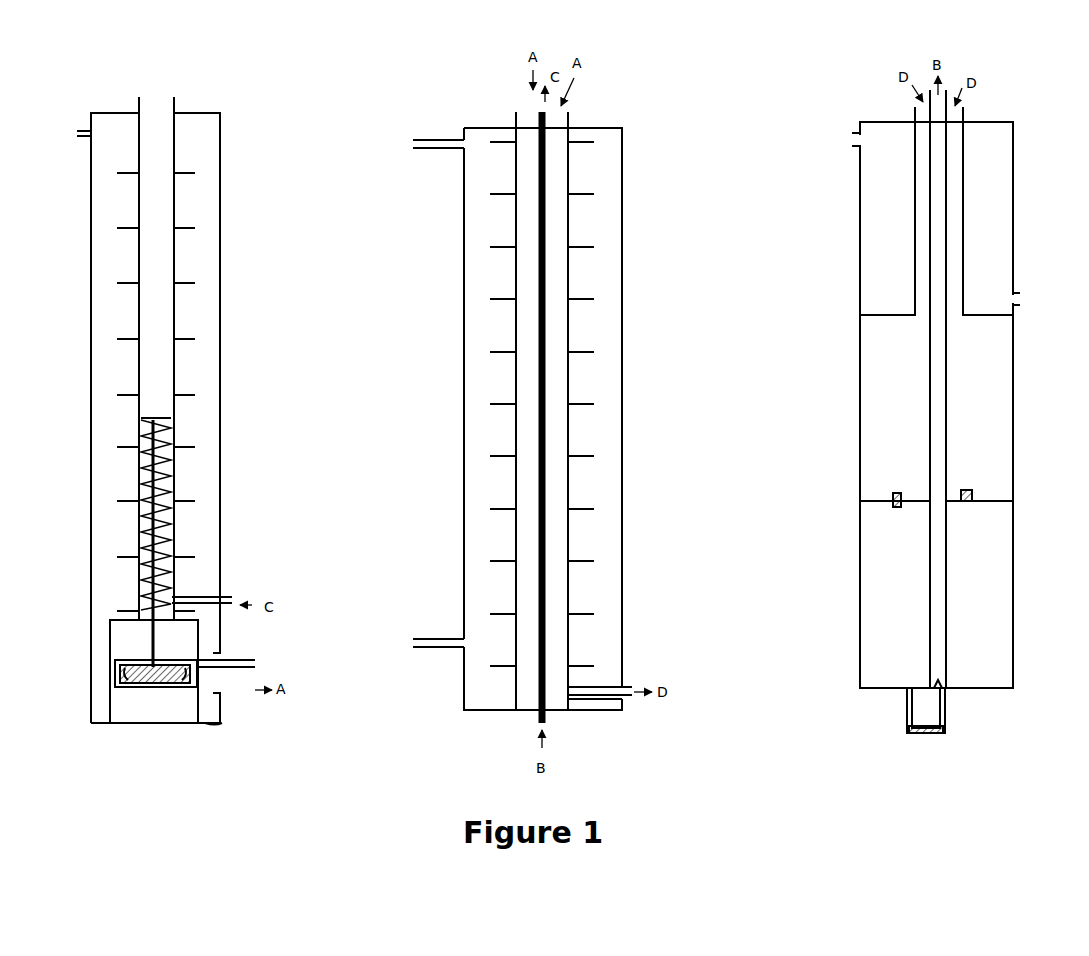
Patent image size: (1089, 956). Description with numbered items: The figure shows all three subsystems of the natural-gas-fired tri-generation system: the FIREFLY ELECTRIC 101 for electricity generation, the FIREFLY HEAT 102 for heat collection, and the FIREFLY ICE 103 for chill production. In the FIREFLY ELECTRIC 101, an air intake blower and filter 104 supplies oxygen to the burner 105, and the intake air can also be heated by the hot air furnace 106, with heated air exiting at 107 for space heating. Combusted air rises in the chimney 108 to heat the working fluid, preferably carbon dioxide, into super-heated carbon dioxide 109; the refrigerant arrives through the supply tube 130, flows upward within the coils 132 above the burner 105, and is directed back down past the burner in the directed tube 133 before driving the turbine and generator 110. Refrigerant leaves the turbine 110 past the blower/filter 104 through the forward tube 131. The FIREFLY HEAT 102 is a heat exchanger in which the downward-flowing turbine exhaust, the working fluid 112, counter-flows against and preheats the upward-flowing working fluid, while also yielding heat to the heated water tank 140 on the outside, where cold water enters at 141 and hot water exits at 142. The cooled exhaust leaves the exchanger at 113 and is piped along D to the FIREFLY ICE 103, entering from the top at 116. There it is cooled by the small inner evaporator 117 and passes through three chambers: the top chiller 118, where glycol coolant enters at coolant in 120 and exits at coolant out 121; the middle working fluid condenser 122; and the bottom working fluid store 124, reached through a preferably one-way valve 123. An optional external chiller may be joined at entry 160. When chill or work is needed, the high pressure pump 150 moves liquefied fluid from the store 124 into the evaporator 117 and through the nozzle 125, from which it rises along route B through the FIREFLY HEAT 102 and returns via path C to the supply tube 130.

The FIREFLY ELECTRIC 101 is at (82, 75).
The FIREFLY HEAT 102 is at (456, 100).
The FIREFLY ICE 103 is at (872, 80).
The air intake blower and filter 104 is at (243, 672).
The burner 105 is at (139, 598).
The hot air furnace 106 is at (108, 320).
The heated air exit 107 is at (76, 137).
The chimney 108 is at (160, 100).
The super-heated carbon dioxide 109 is at (139, 482).
The turbine and generator 110 is at (117, 668).
The working fluid 112 is at (530, 112).
The heat exchanger exit 113 is at (628, 687).
The working fluid entry 116 is at (912, 106).
The evaporator 117 is at (928, 446).
The chiller 118 is at (878, 240).
The coolant in 120 is at (852, 148).
The coolant out 121 is at (1018, 300).
The working fluid condenser 122 is at (875, 386).
The valve 123 is at (897, 506).
The working fluid store 124 is at (888, 562).
The nozzle 125 is at (950, 80).
The supply tube 130 is at (228, 598).
The forward tube 131 is at (255, 666).
The coils 132 is at (165, 482).
The directed tube 133 is at (174, 420).
The heated water tank 140 is at (476, 382).
The cold water inlet 141 is at (428, 635).
The hot water outlet 142 is at (440, 152).
The high pressure pump 150 is at (900, 736).
The entry 160 is at (970, 490).